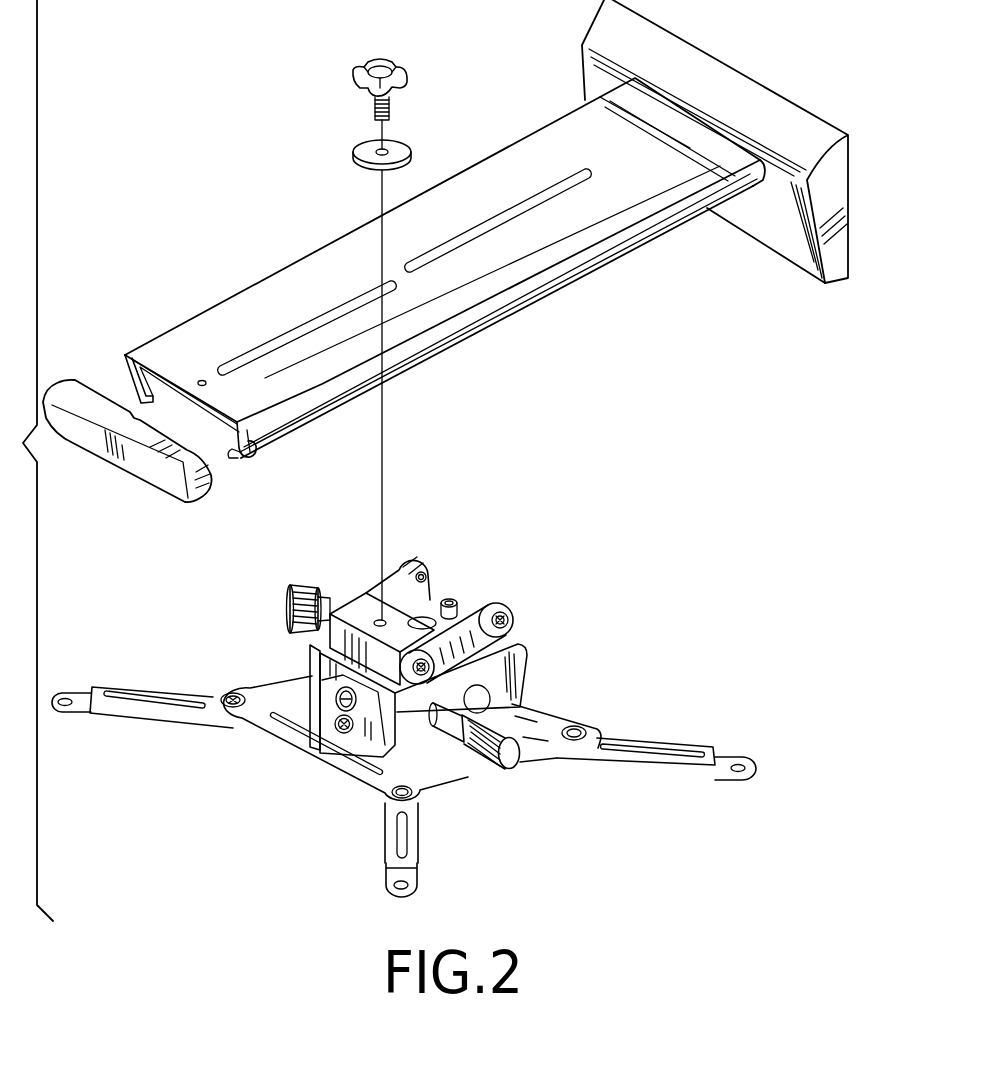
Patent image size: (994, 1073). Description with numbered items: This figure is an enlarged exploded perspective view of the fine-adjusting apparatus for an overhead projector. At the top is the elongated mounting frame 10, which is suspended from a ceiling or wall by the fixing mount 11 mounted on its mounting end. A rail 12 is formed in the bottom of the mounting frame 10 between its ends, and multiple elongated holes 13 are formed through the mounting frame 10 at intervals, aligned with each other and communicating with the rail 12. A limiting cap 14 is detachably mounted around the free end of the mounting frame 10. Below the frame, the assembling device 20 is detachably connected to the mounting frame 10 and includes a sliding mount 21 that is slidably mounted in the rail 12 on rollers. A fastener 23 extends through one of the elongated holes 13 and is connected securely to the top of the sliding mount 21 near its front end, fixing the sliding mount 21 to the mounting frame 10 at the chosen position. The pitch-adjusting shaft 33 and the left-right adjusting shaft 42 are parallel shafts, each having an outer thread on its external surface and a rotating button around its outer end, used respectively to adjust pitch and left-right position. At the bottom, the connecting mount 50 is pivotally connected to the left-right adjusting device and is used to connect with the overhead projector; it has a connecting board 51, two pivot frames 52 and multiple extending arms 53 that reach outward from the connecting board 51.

The mounting frame 10 is at (247, 258).
The fixing mount 11 is at (670, 40).
The rail 12 is at (231, 458).
The elongated holes 13 is at (553, 192).
The limiting cap 14 is at (97, 402).
The assembling device 20 is at (484, 570).
The sliding mount 21 is at (370, 592).
The fastener 23 is at (422, 87).
The pitch-adjusting shaft 33 is at (508, 790).
The left-right adjusting shaft 42 is at (275, 589).
The connecting mount 50 is at (341, 821).
The connecting board 51 is at (250, 692).
The pivot frames 52 is at (323, 718).
The extending arms 53 is at (117, 710).